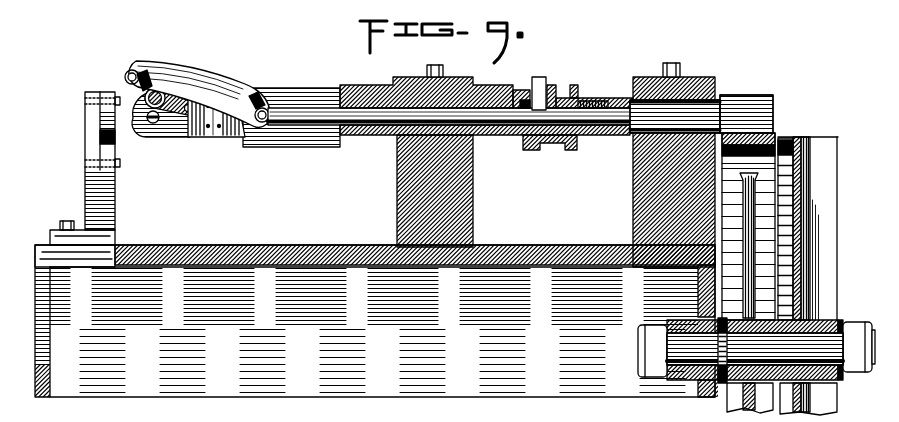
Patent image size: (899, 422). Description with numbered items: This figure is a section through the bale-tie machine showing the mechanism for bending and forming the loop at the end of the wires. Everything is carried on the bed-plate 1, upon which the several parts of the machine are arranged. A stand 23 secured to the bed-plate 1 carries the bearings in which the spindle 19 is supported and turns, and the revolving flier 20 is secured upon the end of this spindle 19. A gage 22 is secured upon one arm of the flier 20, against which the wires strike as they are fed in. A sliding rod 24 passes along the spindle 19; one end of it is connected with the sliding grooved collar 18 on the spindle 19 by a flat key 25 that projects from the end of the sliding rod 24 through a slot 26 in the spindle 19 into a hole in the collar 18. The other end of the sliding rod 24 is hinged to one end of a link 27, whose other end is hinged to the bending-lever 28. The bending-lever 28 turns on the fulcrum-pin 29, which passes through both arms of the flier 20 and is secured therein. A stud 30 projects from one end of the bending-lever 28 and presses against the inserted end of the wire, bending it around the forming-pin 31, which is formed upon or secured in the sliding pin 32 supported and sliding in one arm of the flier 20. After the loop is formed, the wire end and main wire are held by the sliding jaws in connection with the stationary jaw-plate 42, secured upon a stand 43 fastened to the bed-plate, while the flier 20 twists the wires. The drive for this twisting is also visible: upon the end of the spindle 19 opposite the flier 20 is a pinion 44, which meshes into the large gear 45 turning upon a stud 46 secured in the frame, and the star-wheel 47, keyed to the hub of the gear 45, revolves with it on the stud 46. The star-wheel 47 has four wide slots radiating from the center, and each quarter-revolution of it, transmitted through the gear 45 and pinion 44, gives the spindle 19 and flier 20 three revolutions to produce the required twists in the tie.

The bed-plate 1 is at (449, 211).
The grooved collar 18 is at (449, 211).
The spindle 19 is at (443, 130).
The revolving flier 20 is at (291, 110).
The gage 22 is at (238, 125).
The stand 23 is at (449, 211).
The sliding rod 24 is at (318, 122).
The flat key 25 is at (539, 77).
The slot 26 is at (524, 100).
The link 27 is at (240, 67).
The bending-lever 28 is at (168, 105).
The fulcrum-pin 29 is at (160, 95).
The stud 30 is at (188, 112).
The forming-pin 31 is at (160, 121).
The sliding pin 32 is at (153, 120).
The stationary jaw-plate 42 is at (80, 136).
The stand 43 is at (110, 161).
The pinion 44 is at (449, 212).
The large gear 45 is at (775, 150).
The stud 46 is at (449, 211).
The star-wheel 47 is at (808, 276).